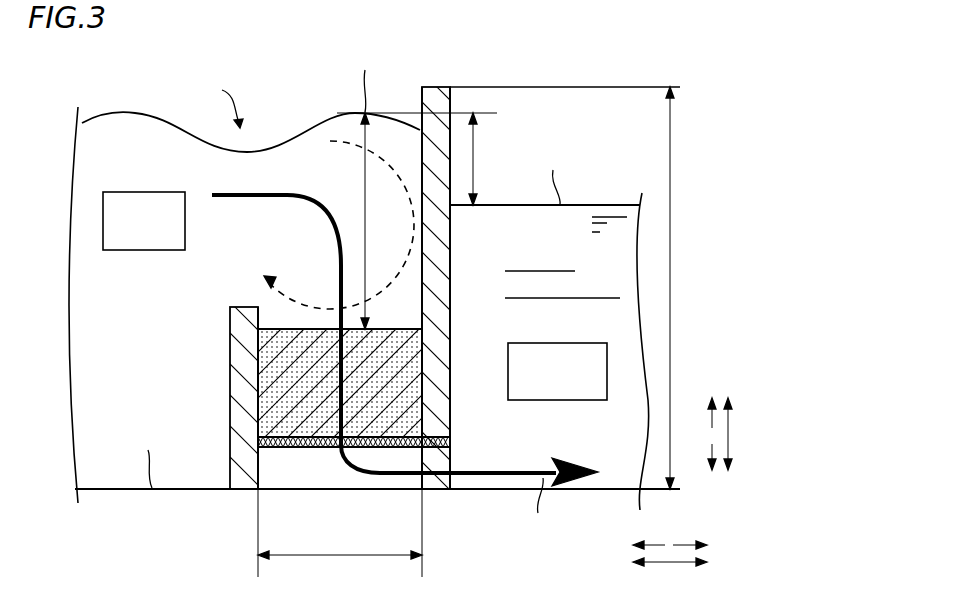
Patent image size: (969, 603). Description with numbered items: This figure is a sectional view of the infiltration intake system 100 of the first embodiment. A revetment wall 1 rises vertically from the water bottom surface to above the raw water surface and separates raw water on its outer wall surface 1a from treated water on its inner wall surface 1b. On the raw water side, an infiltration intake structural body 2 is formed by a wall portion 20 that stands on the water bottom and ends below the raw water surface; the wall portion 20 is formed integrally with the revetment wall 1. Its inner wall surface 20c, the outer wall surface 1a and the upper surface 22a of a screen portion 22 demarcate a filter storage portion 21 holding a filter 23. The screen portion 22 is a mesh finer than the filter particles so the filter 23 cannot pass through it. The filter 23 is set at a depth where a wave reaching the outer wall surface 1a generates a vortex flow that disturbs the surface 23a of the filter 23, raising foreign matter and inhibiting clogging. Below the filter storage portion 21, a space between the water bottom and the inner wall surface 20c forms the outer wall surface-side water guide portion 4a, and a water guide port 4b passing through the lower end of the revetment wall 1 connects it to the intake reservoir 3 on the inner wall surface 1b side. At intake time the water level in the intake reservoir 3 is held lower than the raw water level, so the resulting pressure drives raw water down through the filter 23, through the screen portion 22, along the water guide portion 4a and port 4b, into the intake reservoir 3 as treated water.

The infiltration intake system 100 is at (538, 86).
The revetment wall 1 is at (427, 100).
The outer wall surface 1a is at (420, 105).
The inner wall surface 1b is at (450, 105).
The infiltration intake structural body 2 is at (198, 327).
The intake reservoir 3 is at (622, 188).
The outer wall surface-side water guide portion 4a is at (335, 473).
The water guide port 4b is at (440, 449).
The wall portion 20 is at (232, 474).
The inner wall surface 20c is at (259, 472).
The filter storage portion 21 is at (313, 322).
The screen portion 22 is at (262, 441).
The upper surface of screen portion 22a is at (410, 424).
The filter 23 is at (260, 383).
The surface of filter 23a is at (392, 326).